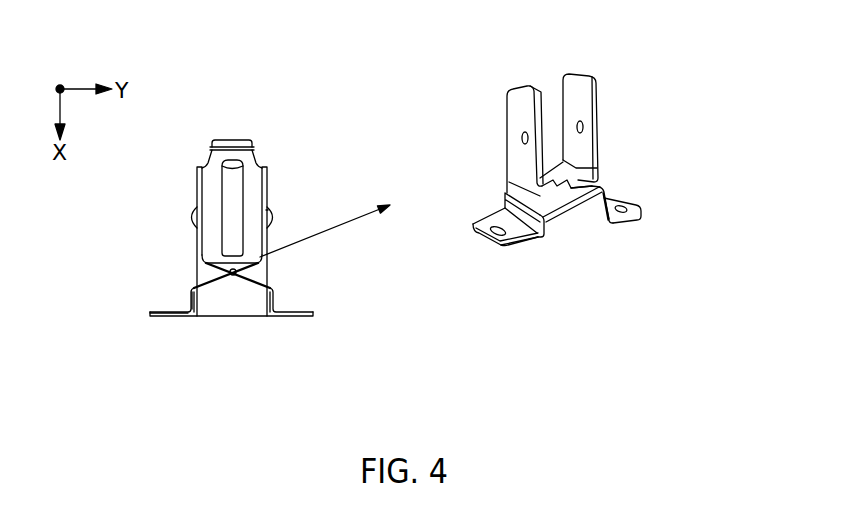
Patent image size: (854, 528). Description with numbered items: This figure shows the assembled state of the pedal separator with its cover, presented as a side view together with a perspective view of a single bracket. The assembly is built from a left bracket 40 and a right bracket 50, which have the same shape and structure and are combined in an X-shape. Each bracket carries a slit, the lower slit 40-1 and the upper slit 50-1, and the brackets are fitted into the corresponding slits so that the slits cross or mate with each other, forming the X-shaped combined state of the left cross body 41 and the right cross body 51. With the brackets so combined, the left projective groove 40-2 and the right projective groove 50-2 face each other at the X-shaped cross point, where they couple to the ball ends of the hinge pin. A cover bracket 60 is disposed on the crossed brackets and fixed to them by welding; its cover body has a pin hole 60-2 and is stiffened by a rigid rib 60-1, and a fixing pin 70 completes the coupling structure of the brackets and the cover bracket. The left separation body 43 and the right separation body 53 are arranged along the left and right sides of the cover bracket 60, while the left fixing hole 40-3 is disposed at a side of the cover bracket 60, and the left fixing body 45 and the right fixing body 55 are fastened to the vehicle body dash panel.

The left bracket 40 is at (292, 317).
The lower slit 40-1 is at (570, 162).
The left projective groove 40-2 is at (192, 218).
The left fixing hole 40-3 is at (478, 235).
The left cross body 41 is at (253, 284).
The left separation body 43 is at (580, 93).
The left fixing body 45 is at (523, 246).
The right bracket 50 is at (170, 317).
The upper slit 50-1 is at (603, 185).
The right projective groove 50-2 is at (268, 210).
The right cross body 51 is at (207, 289).
The right separation body 53 is at (513, 110).
The right fixing body 55 is at (600, 215).
The cover bracket 60 is at (211, 146).
The rigid rib 60-1 is at (232, 182).
The pin hole 60-2 is at (237, 272).
The fixing pin 70 is at (203, 262).